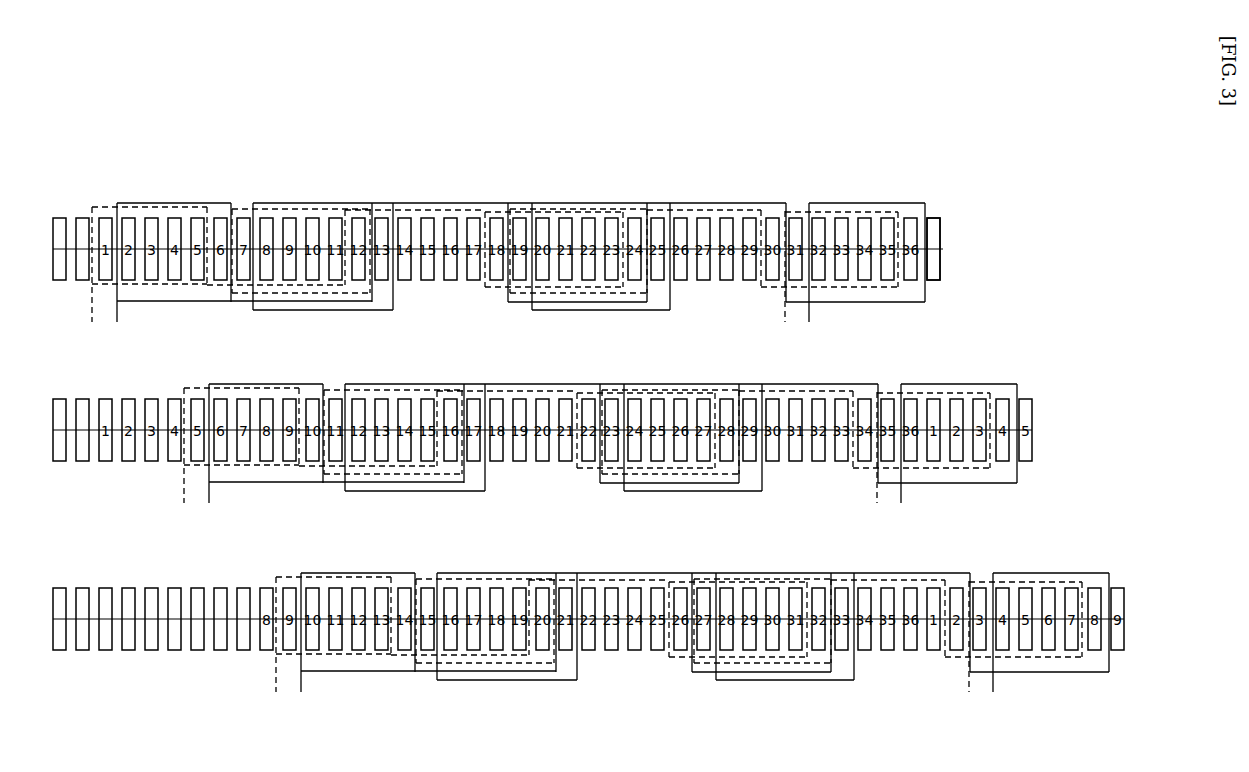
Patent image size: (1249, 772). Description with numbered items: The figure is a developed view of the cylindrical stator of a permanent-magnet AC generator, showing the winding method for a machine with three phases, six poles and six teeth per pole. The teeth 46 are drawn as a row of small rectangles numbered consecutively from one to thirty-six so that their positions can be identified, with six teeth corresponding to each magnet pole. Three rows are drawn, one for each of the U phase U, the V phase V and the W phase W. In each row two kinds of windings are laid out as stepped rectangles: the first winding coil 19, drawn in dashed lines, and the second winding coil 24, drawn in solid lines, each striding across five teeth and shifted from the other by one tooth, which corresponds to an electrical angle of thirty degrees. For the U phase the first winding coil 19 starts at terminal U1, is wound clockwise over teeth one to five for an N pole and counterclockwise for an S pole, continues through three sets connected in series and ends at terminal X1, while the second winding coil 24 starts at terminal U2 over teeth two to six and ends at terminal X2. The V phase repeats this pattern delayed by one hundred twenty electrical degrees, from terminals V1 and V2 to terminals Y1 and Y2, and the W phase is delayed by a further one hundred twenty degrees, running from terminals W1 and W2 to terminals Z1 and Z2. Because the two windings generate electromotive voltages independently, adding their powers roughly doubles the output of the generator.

The first winding coil 19 is at (92, 207).
The second winding coil 24 is at (198, 203).
The tooth 46 is at (937, 218).
The terminal U1 is at (93, 340).
The terminal U2 is at (122, 340).
The terminal X1 is at (784, 340).
The terminal X2 is at (812, 340).
The terminal V1 is at (186, 521).
The terminal V2 is at (214, 521).
The terminal Y1 is at (874, 521).
The terminal Y2 is at (905, 521).
The terminal W1 is at (269, 710).
The terminal W2 is at (306, 710).
The terminal Z1 is at (968, 710).
The terminal Z2 is at (997, 710).
The U phase U is at (494, 191).
The V phase V is at (487, 372).
The W phase W is at (489, 561).